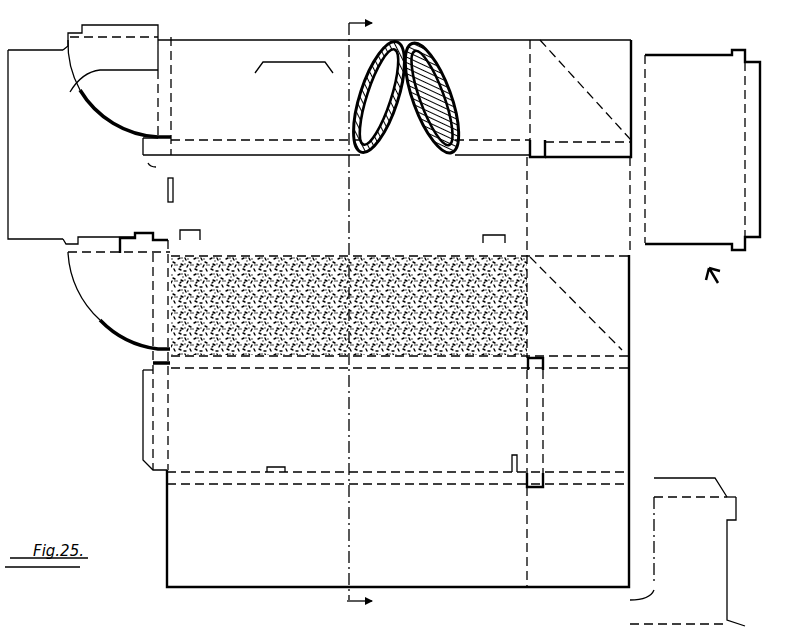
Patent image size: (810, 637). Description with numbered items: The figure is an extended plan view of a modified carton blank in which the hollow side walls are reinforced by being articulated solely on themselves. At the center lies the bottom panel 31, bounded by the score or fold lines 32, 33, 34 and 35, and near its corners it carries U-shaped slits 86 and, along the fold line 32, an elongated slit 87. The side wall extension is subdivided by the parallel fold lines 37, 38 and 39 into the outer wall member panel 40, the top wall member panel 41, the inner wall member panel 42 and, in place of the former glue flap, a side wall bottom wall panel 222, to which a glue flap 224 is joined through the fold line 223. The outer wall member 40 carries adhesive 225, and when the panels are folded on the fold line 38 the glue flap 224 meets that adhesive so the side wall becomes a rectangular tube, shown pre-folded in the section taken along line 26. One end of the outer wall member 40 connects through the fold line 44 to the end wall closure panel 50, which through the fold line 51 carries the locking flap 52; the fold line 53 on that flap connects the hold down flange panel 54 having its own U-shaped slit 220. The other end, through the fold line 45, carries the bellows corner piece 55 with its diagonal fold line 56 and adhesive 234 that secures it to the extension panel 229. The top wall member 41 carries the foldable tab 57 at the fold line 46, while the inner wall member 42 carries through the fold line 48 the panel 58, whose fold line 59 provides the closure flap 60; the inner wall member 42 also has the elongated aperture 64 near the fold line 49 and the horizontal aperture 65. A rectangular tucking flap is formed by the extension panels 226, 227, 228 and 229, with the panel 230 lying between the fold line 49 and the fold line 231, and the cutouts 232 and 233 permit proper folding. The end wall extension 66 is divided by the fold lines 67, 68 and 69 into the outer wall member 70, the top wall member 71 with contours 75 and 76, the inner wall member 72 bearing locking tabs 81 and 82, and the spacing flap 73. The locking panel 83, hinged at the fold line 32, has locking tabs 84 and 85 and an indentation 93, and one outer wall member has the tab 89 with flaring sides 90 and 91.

The section line 26 is at (344, 313).
The bottom panel 31 is at (417, 203).
The score or fold line 32 is at (172, 214).
The score or fold line 33 is at (410, 41).
The score or fold line 34 is at (528, 202).
The score or fold line 35 is at (388, 256).
The score or fold line 37 is at (503, 130).
The score or fold line 38 is at (381, 370).
The score or fold line 39 is at (428, 78).
The outer wall member panel 40 is at (438, 262).
The top wall member panel 41 is at (477, 370).
The inner wall member panel 42 is at (238, 458).
The score or fold line 44 is at (168, 330).
The score or fold line 45 is at (530, 97).
The score or fold line 46 is at (172, 360).
The score or fold line 48 is at (170, 416).
The score or fold line 49 is at (527, 412).
The end wall closure panel 50 is at (157, 297).
The score or fold line 51 is at (155, 308).
The locking flap 52 is at (160, 53).
The score or fold line 53 is at (103, 38).
The hold down flange panel 54 is at (161, 30).
The corner piece 55 is at (622, 322).
The diagonal score or fold line 56 is at (590, 321).
The foldable tab 57 is at (158, 90).
The panel 58 is at (163, 380).
The score or fold line 59 is at (155, 441).
The closure flap 60 is at (148, 468).
The elongated aperture 64 is at (512, 462).
The elongated horizontal aperture 65 is at (288, 468).
The extension 66 is at (702, 178).
The fold or score line 67 is at (630, 234).
The fold or score line 68 is at (646, 172).
The fold or score line 69 is at (745, 167).
The end wall outer wall member 70 is at (540, 222).
The end wall top wall member 71 is at (645, 213).
The end wall inner wall member 72 is at (655, 188).
The spacing flap 73 is at (755, 240).
The contour 75 is at (645, 55).
The contour 76 is at (645, 252).
The locking tab 81 is at (745, 50).
The locking tab 82 is at (745, 254).
The locking panel 83 is at (172, 170).
The locking tab 84 is at (63, 48).
The locking tab 85 is at (66, 250).
The U-shaped slit 86 is at (200, 230).
The elongated aperture or slit 87 is at (175, 193).
The tab 89 is at (293, 75).
The flaring side 90 is at (262, 68).
The flaring side 91 is at (328, 66).
The indentation 93 is at (155, 235).
The U-shaped slit 220 is at (168, 222).
The side wall bottom wall panel 222 is at (433, 65).
The score or fold line 223 is at (448, 485).
The glue flap 224 is at (432, 102).
The adhesive 225 is at (265, 262).
The extension panel 226 is at (632, 366).
The extension panel 227 is at (630, 433).
The extension panel 228 is at (628, 478).
The extension panel 229 is at (578, 582).
The panel 230 is at (540, 411).
The score or fold line 231 is at (543, 432).
The cutout or aperture 232 is at (538, 158).
The cutout or aperture 233 is at (543, 486).
The adhesive 234 is at (553, 280).